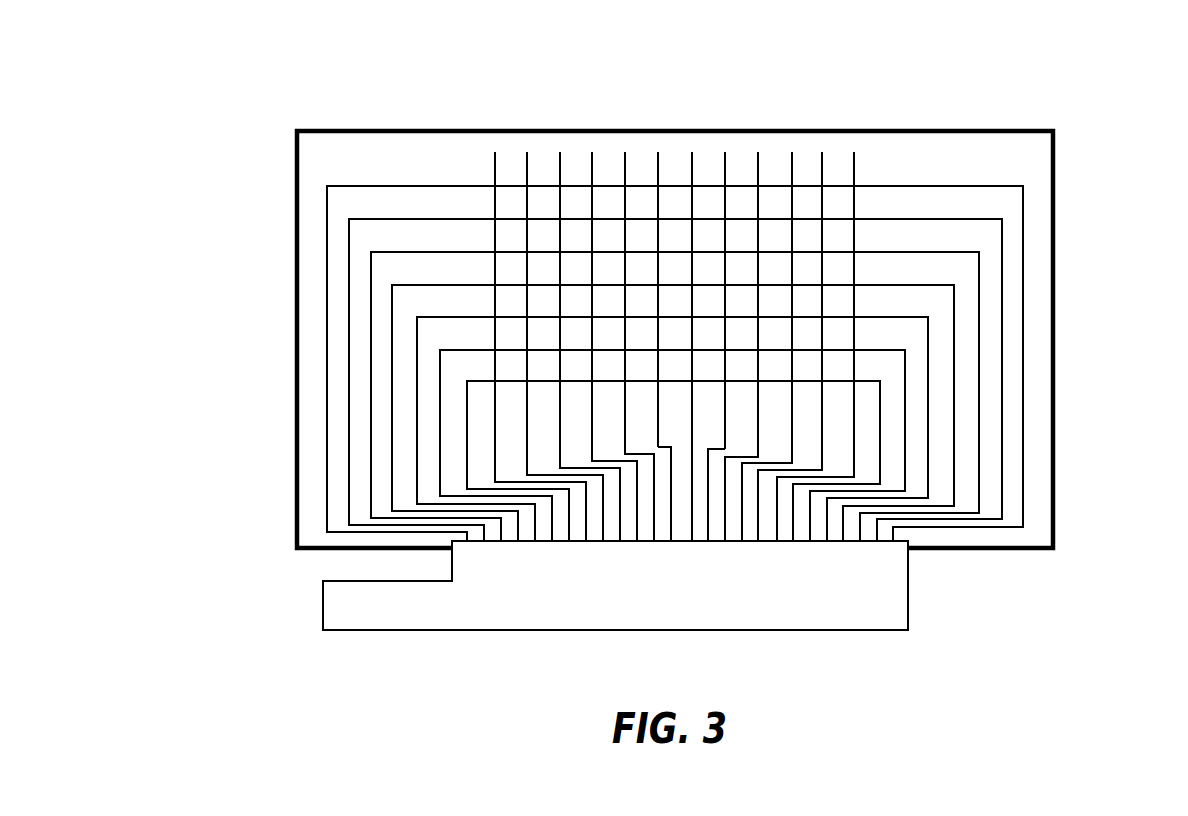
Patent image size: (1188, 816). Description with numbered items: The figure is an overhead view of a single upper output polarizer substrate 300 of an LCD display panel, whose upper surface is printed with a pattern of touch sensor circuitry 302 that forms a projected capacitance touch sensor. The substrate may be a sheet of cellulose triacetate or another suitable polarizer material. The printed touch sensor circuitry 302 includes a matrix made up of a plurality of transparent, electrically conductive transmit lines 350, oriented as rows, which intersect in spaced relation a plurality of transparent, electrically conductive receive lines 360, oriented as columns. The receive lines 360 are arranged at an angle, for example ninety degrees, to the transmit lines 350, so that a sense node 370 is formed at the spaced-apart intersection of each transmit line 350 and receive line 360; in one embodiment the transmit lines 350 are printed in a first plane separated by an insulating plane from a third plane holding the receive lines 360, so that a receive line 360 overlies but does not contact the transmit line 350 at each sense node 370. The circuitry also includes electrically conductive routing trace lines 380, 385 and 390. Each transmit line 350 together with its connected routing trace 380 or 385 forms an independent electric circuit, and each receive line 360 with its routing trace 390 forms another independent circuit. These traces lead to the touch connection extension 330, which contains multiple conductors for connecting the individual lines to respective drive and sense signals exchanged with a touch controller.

The upper output polarizer substrate 300 is at (900, 130).
The printed touch sensor circuitry 302 is at (482, 160).
The touch connection extension 330 is at (908, 602).
The transmit lines 350 is at (709, 252).
The receive lines 360 is at (560, 273).
The sense node 370 is at (823, 252).
The routing trace lines 380 is at (372, 493).
The routing trace lines 385 is at (980, 505).
The routing trace lines 390 is at (708, 503).